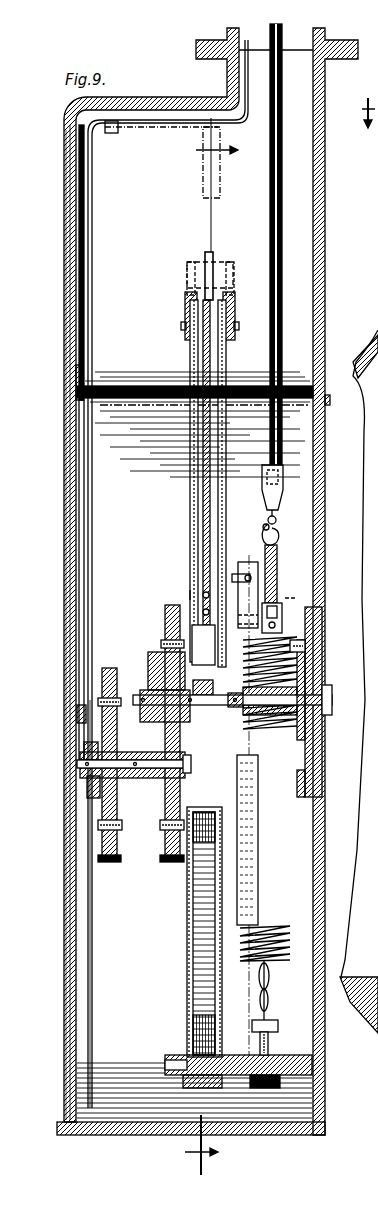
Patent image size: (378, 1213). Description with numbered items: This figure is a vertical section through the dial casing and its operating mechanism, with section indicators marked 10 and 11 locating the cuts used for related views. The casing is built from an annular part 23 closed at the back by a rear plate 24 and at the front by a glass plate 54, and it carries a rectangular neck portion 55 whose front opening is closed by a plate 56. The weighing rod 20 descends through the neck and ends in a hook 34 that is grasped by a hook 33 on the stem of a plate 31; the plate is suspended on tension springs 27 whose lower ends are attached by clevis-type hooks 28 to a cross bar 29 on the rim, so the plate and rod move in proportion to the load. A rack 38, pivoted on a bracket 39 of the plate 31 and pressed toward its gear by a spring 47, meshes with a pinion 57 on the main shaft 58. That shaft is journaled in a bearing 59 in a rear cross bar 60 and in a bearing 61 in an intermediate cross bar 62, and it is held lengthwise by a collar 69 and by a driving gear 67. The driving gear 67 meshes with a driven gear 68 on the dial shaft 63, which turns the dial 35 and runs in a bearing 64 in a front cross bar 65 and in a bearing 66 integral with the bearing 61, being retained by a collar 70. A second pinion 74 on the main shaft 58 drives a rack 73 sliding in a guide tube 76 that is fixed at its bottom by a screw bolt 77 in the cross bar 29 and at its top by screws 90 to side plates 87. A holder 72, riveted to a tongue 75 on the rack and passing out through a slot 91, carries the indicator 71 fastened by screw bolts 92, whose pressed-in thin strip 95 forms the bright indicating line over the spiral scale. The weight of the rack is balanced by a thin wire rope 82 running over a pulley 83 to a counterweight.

The section line 10 is at (221, 660).
The section line 11 is at (355, 113).
The weighing rod 20 is at (268, 258).
The annular part 23 is at (128, 1122).
The rear plate 24 is at (320, 858).
The tension springs 27 is at (266, 928).
The screw hooks 28 is at (270, 1003).
The cross bar 29 is at (281, 1058).
The plate 31 is at (278, 568).
The hook 33 is at (280, 520).
The hook 34 is at (284, 490).
The dial 35 is at (93, 950).
The rack 38 is at (259, 815).
The bracket 39 is at (295, 600).
The spring 47 is at (250, 566).
The glass plate 54 is at (66, 926).
The neck portion 55 is at (296, 210).
The plate 56 is at (68, 250).
The pinion 57 is at (232, 738).
The main shaft 58 is at (270, 697).
The bearing 59 is at (321, 690).
The cross bar 60 is at (312, 650).
The bearing 61 is at (183, 680).
The cross bar 62 is at (166, 608).
The dial shaft 63 is at (113, 769).
The bearing 64 is at (122, 826).
The cross bar 65 is at (118, 683).
The bearing 66 is at (185, 790).
The driving gear 67 is at (150, 655).
The driven gear 68 is at (160, 786).
The collar 69 is at (330, 705).
The collar 70 is at (242, 720).
The indicator 71 is at (92, 308).
The holder 72 is at (166, 130).
The rack 73 is at (198, 896).
The pinion 74 is at (215, 679).
The tongue 75 is at (192, 596).
The guide tube 76 is at (230, 360).
The screw bolt 77 is at (201, 1080).
The flexible rope 82 is at (194, 492).
The pulley 83 is at (205, 255).
The side plates 87 is at (233, 305).
The screws 90 is at (236, 325).
The slot 91 is at (203, 365).
The screw bolts 92 is at (108, 395).
The thin strip 95 is at (78, 713).